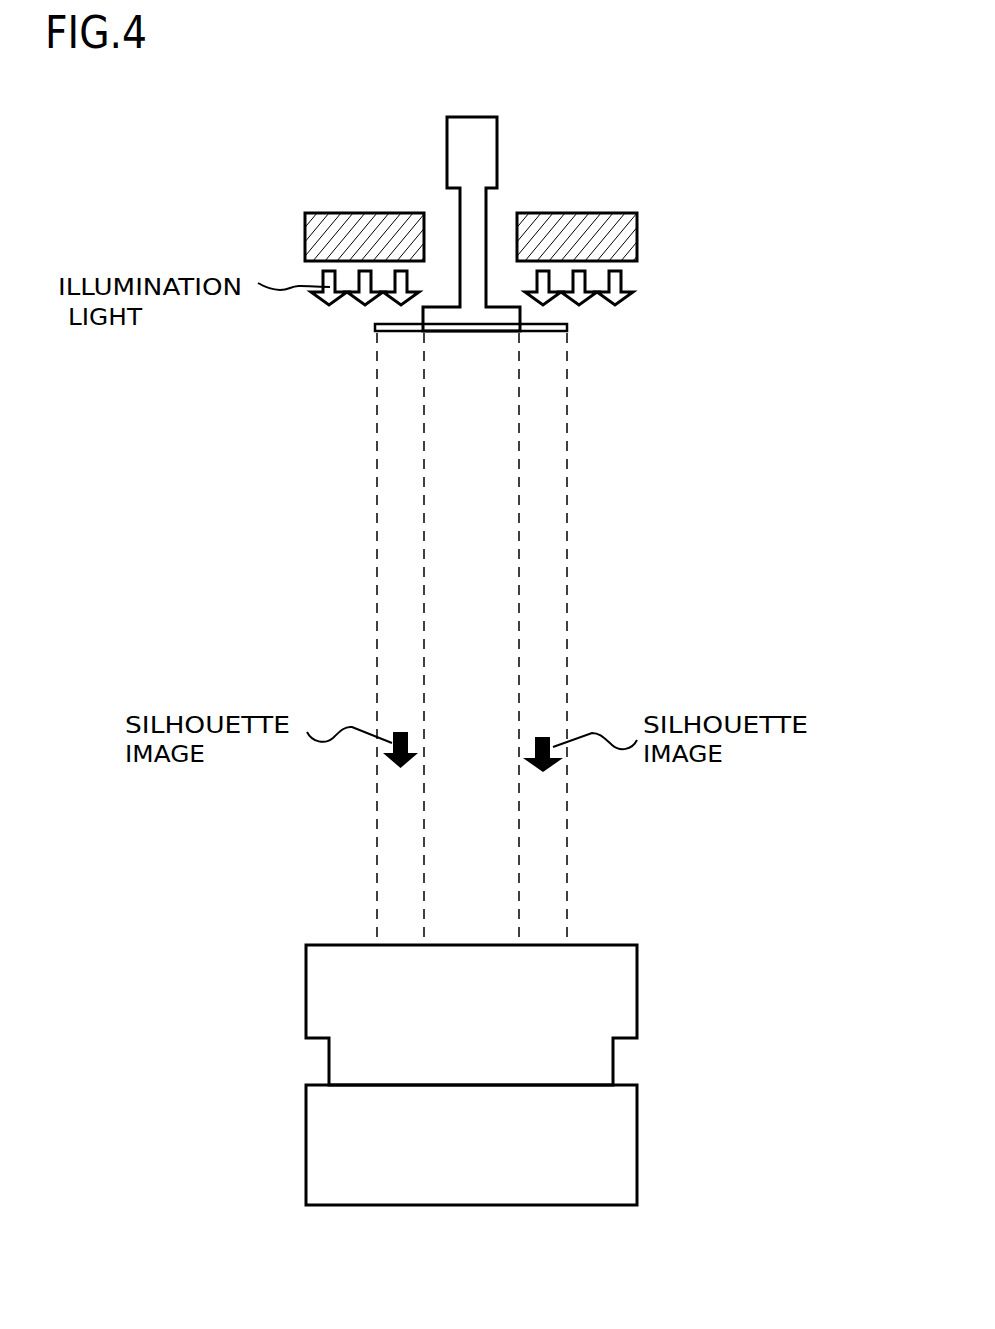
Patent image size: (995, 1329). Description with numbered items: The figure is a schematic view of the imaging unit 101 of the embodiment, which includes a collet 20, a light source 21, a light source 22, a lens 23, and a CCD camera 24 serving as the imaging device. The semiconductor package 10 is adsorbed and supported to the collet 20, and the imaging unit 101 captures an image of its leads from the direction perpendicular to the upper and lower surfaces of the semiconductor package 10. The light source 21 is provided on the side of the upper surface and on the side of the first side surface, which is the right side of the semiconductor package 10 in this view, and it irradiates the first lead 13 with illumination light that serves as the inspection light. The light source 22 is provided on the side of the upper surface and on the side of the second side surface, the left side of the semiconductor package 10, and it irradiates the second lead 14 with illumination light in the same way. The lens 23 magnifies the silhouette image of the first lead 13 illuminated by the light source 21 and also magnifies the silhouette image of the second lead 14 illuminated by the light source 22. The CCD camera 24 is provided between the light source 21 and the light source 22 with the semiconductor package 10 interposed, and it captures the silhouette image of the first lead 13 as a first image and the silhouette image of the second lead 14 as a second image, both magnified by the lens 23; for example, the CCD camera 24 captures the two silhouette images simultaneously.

The imaging unit 101 is at (792, 155).
The collet 20 is at (472, 140).
The light source 21 is at (597, 233).
The light source 22 is at (348, 235).
The semiconductor package 10 is at (597, 333).
The first lead 13 is at (543, 332).
The second lead 14 is at (398, 332).
The lens 23 is at (590, 992).
The CCD camera 24 is at (590, 1157).